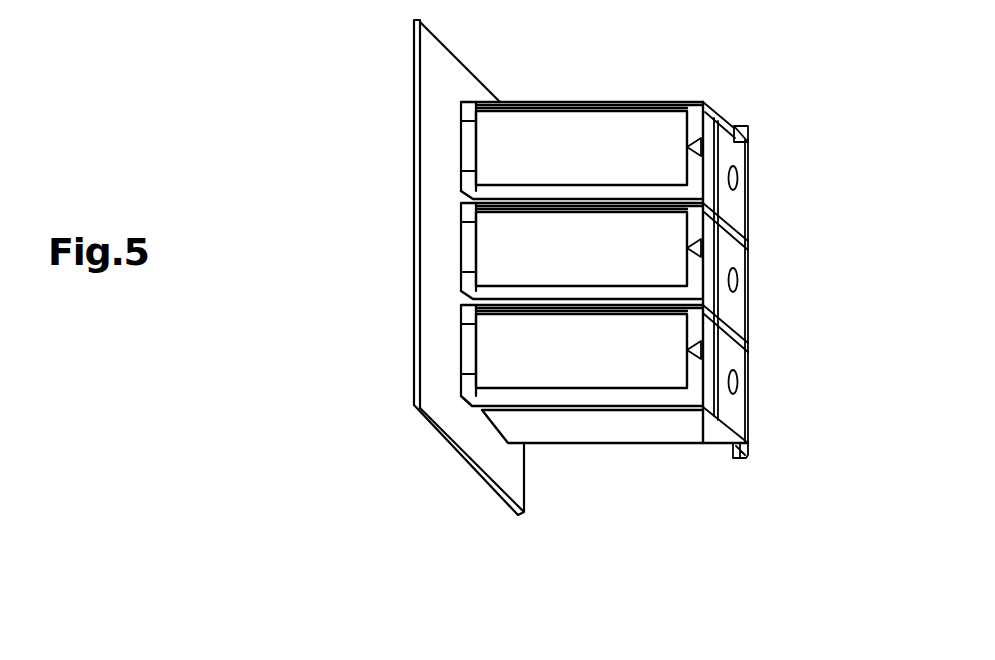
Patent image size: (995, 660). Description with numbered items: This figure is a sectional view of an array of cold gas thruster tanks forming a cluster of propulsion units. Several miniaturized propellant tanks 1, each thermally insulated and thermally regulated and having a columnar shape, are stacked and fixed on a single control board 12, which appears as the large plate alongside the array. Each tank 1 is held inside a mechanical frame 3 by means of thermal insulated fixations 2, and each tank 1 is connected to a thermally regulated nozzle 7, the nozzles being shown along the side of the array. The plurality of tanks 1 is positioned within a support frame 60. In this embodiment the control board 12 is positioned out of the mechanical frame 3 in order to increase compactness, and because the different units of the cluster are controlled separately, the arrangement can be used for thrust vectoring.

The propellant tank 1 is at (606, 104).
The thermal insulated fixations 2 is at (468, 104).
The mechanical frame 3 is at (662, 104).
The nozzle 7 is at (698, 148).
The control board 12 is at (413, 232).
The support frame 60 is at (750, 448).